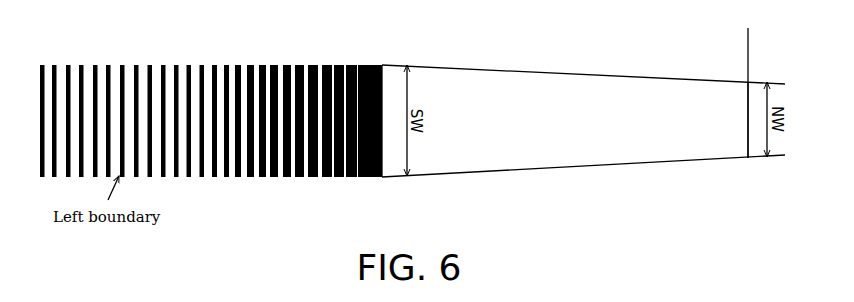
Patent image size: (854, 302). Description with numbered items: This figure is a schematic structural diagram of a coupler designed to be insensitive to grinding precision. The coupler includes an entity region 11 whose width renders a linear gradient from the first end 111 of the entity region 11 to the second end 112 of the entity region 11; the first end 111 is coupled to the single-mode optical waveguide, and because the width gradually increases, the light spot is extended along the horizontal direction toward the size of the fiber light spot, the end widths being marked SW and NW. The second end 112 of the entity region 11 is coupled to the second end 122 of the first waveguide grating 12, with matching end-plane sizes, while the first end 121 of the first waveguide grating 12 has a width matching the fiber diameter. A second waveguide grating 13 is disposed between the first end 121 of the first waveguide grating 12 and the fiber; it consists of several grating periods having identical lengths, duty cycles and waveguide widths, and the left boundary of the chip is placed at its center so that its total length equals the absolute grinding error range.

The entity region 11 is at (748, 35).
The first waveguide grating 12 is at (382, 65).
The second waveguide grating 13 is at (201, 10).
The first end of the entity region 111 is at (750, 141).
The second end of the entity region 112 is at (382, 165).
The first end of the first waveguide grating 121 is at (201, 153).
The second end of the first waveguide grating 122 is at (374, 177).